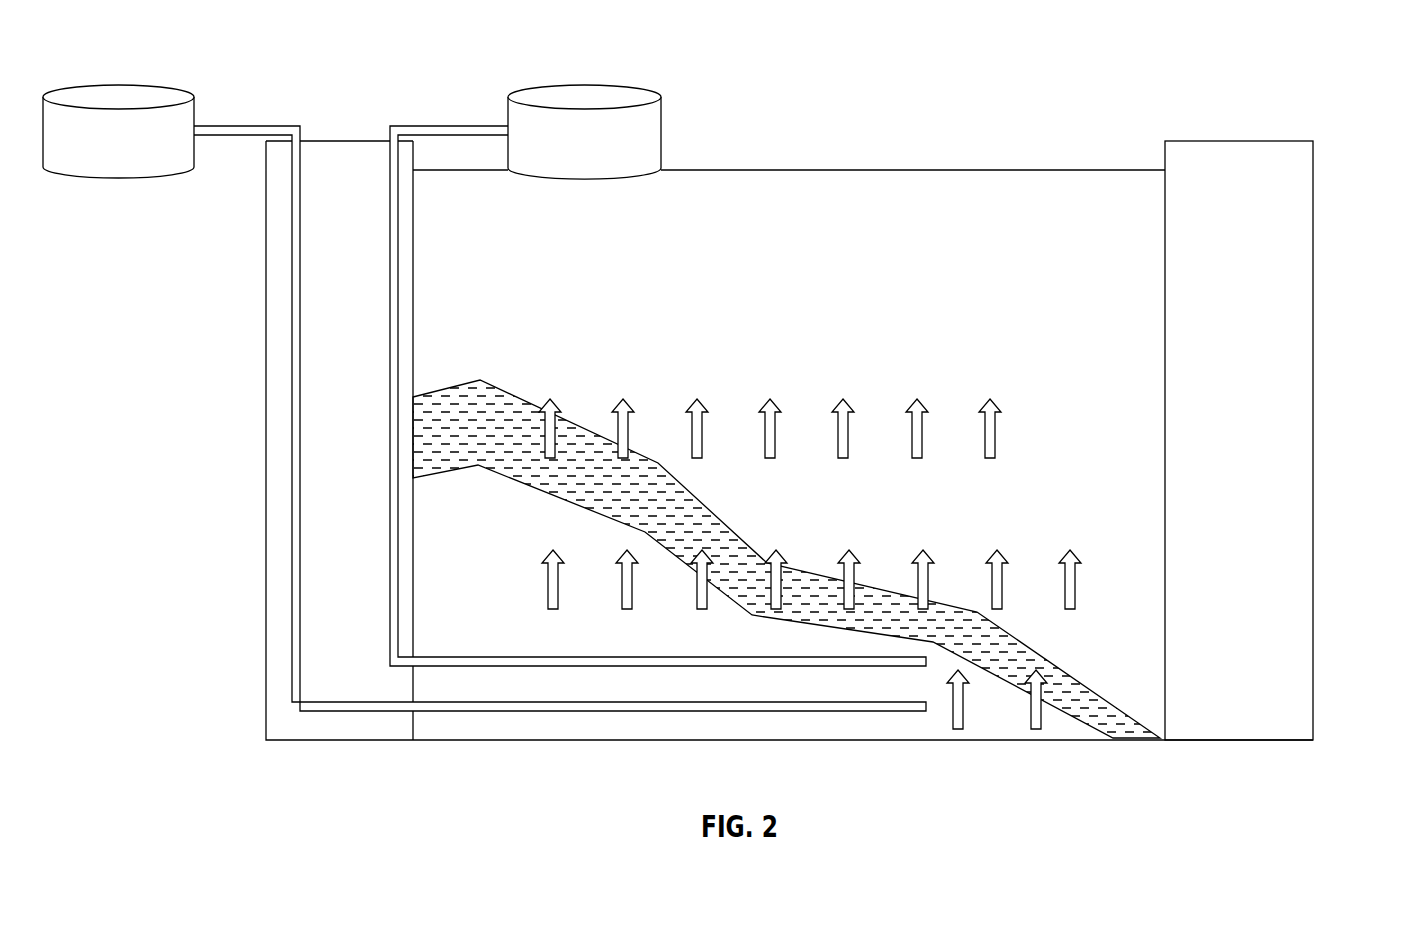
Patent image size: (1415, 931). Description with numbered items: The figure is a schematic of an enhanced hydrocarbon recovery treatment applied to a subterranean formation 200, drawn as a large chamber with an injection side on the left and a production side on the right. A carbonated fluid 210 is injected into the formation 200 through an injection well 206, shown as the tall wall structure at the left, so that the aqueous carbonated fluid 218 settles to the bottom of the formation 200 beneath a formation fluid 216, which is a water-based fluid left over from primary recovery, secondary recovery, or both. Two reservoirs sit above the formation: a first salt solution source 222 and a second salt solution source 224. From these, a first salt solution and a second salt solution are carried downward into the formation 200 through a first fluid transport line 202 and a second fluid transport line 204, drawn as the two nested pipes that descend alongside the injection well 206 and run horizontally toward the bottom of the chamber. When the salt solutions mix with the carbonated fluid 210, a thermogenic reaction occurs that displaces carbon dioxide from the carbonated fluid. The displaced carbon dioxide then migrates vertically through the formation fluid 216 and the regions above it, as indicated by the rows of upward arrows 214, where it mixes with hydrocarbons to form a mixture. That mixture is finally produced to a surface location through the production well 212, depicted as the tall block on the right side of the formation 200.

The formation 200 is at (955, 170).
The first fluid transport line 202 is at (452, 126).
The second fluid transport line 204 is at (248, 126).
The injection well 206 is at (267, 213).
The carbonated fluid 210 is at (1070, 730).
The production well 212 is at (1313, 200).
The arrows 214 is at (518, 299).
The formation fluid 216 is at (517, 446).
The aqueous carbonated fluid 218 is at (518, 592).
The first salt solution source 222 is at (585, 97).
The second salt solution source 224 is at (118, 97).